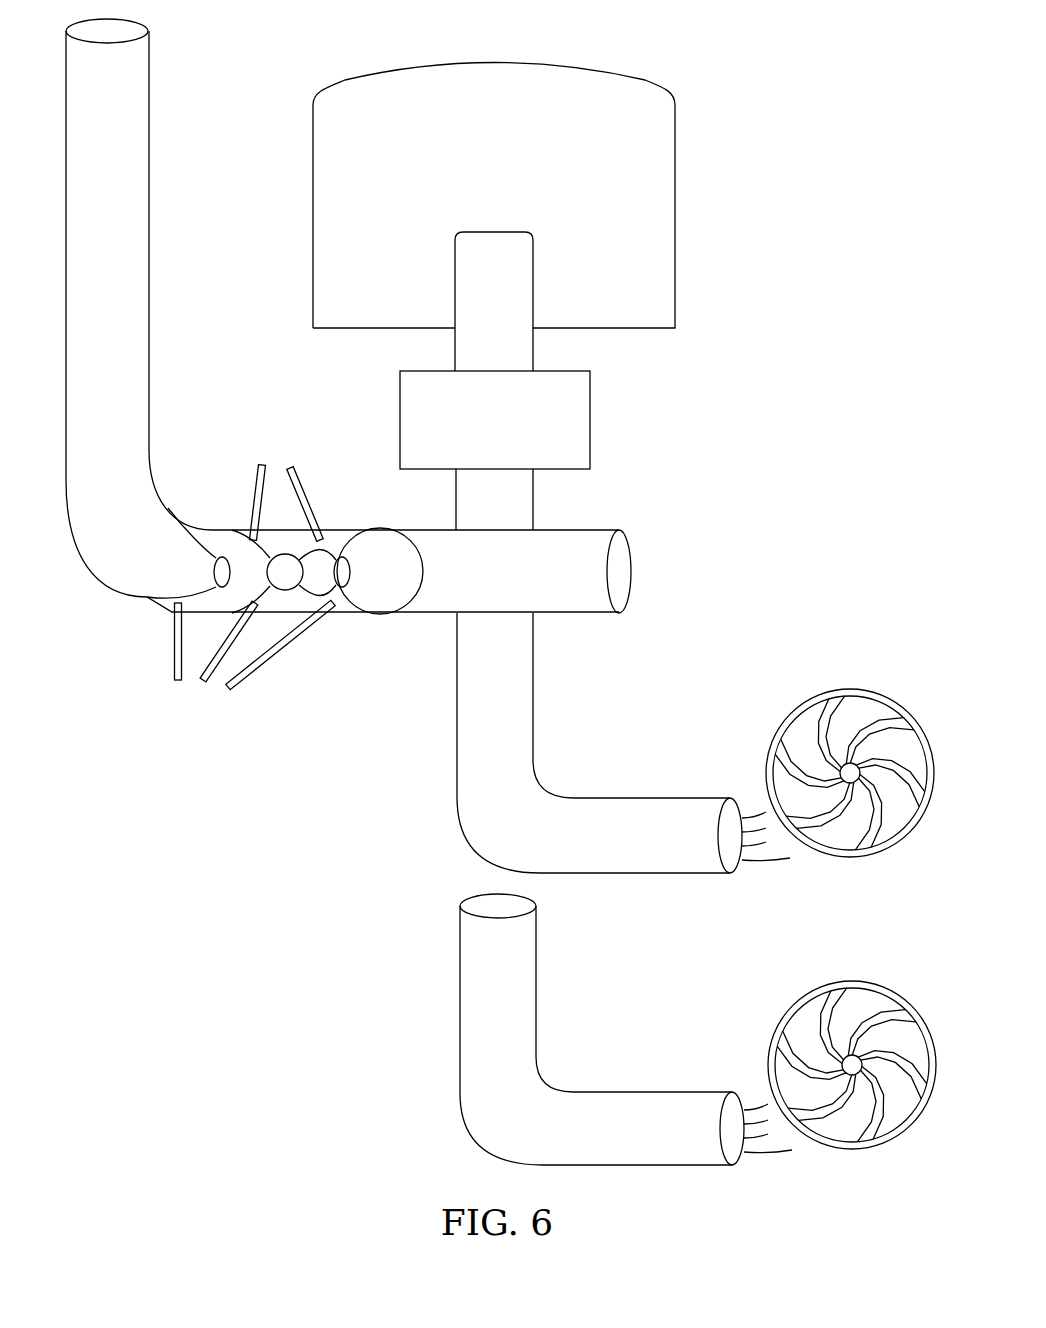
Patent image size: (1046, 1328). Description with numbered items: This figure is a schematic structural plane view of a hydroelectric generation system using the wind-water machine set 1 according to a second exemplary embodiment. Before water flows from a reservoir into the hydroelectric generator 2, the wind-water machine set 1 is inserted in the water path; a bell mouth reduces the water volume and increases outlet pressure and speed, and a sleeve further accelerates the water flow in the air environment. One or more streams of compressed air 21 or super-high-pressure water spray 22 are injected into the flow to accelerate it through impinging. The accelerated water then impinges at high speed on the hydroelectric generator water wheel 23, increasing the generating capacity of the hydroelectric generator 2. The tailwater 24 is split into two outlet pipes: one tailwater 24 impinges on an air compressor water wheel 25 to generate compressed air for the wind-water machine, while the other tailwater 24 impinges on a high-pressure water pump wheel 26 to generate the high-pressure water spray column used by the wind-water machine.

The wind-water machine set 1 is at (284, 553).
The hydroelectric generator 2 is at (591, 405).
The compressed air 21 is at (228, 689).
The super-high-pressure water spray 22 is at (262, 463).
The hydroelectric generator water wheel 23 is at (417, 597).
The tailwater 24 is at (510, 655).
The air compressor water wheel 25 is at (842, 978).
The high-pressure water pump wheel 26 is at (840, 690).